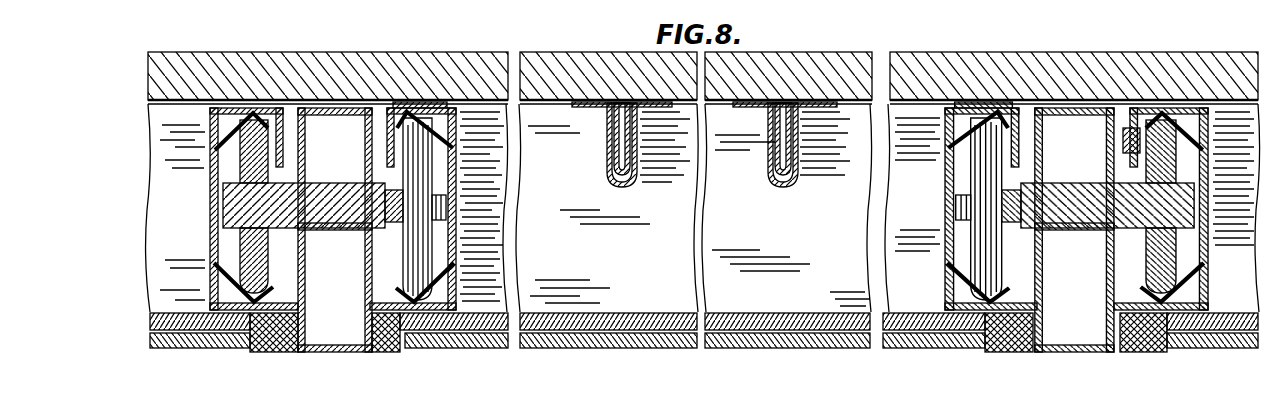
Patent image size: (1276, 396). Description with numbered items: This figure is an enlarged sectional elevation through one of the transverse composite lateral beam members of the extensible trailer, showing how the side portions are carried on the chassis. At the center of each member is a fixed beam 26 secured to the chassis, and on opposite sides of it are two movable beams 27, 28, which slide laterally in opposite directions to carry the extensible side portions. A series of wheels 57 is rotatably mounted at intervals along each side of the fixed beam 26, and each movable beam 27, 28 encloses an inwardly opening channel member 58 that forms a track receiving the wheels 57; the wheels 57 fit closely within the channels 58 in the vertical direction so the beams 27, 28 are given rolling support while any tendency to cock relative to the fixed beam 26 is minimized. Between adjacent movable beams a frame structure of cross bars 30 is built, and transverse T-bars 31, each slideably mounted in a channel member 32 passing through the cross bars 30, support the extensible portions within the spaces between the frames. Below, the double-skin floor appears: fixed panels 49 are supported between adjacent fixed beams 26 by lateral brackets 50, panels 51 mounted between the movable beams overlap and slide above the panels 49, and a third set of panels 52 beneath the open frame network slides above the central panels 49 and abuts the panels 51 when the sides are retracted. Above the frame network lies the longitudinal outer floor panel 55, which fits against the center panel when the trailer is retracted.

The fixed beam 26 is at (335, 354).
The movable beam 27 is at (222, 108).
The movable beam 28 is at (425, 108).
The cross bar 30 is at (598, 254).
The transverse T-bar 31 is at (592, 104).
The channel member 32 is at (612, 181).
The fixed panel 49 is at (205, 348).
The lateral bracket 50 is at (290, 352).
The panel 51 is at (790, 316).
The panel 52 is at (154, 320).
The outer panel 55 is at (362, 60).
The wheel 57 is at (262, 266).
The channel member 58 is at (215, 275).